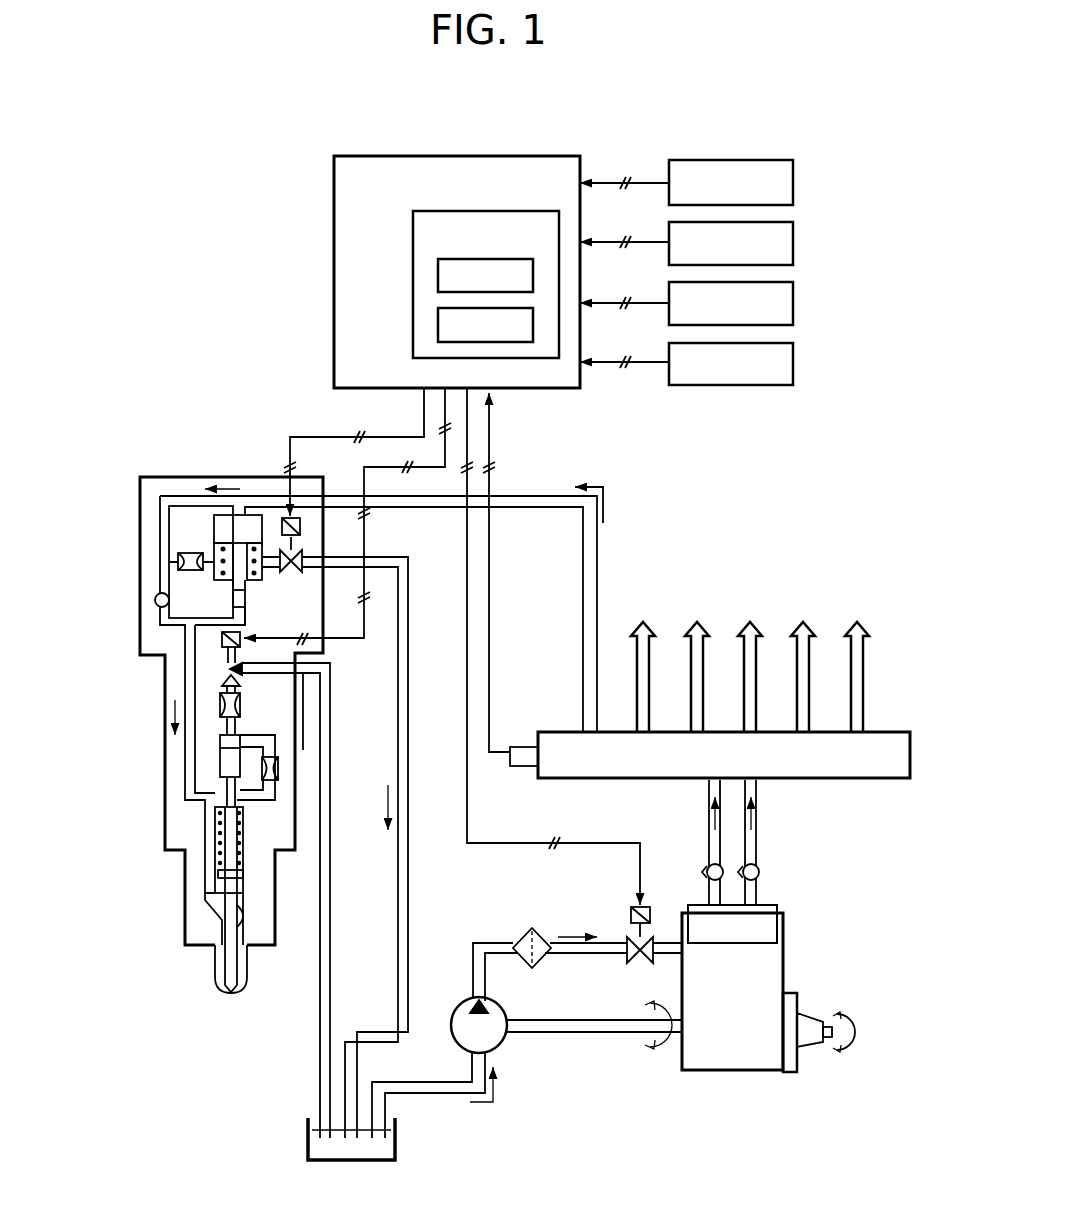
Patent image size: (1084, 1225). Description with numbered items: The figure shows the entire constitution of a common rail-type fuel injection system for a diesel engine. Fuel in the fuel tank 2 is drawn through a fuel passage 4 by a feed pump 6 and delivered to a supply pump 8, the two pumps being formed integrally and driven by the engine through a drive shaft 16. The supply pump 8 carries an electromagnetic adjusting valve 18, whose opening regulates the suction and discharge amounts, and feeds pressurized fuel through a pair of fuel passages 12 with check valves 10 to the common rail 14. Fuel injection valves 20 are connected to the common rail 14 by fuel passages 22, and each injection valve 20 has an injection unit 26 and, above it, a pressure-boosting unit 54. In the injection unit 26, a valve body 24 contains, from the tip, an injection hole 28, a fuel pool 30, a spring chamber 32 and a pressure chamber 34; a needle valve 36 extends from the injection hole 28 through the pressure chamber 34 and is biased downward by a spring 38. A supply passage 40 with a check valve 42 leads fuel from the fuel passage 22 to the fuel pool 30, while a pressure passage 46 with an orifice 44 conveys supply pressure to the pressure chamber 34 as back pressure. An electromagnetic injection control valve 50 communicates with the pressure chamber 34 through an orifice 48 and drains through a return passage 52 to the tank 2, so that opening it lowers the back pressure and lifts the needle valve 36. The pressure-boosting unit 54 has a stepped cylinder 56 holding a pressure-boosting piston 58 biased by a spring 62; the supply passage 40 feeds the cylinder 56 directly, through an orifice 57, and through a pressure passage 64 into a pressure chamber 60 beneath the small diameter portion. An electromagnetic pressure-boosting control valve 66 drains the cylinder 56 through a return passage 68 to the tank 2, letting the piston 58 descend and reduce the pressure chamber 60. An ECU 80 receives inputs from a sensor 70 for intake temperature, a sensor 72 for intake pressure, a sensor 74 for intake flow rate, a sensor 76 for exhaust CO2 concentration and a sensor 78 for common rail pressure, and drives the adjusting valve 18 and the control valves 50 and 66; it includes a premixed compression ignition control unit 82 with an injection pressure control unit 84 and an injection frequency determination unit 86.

The fuel tank 2 is at (308, 1147).
The fuel passage 4 is at (440, 1094).
The feed pump 6 is at (460, 1004).
The supply pump 8 is at (785, 966).
The check valve 10 is at (760, 873).
The fuel passage 12 is at (757, 848).
The common rail 14 is at (872, 780).
The drive shaft 16 is at (563, 1034).
The electromagnetic adjusting valve 18 is at (631, 914).
The fuel injection valve 20 is at (160, 355).
The fuel passage 22 is at (582, 612).
The valve body 24 is at (300, 724).
The injection unit 26 is at (140, 843).
The injection hole 28 is at (215, 978).
The fuel pool 30 is at (215, 940).
The spring chamber 32 is at (215, 830).
The pressure chamber 34 is at (220, 755).
The needle valve 36 is at (247, 912).
The spring 38 is at (218, 857).
The supply passage 40 is at (175, 498).
The check valve 42 is at (155, 601).
The orifice 44 is at (278, 768).
The pressure passage 46 is at (262, 812).
The orifice 48 is at (265, 690).
The electromagnetic injection control valve 50 is at (222, 678).
The return passage 52 is at (318, 1040).
The pressure-boosting unit 54 is at (220, 413).
The cylinder 56 is at (213, 524).
The orifice 57 is at (178, 565).
The pressure-boosting piston 58 is at (212, 528).
The pressure chamber 60 is at (248, 598).
The spring 62 is at (216, 548).
The pressure passage 64 is at (222, 640).
The electromagnetic pressure-boosting control valve 66 is at (302, 527).
The return passage 68 is at (410, 684).
The sensor 70 is at (793, 183).
The sensor 72 is at (793, 242).
The sensor 74 is at (793, 303).
The sensor 76 is at (793, 362).
The sensor 78 is at (518, 747).
The ECU 80 is at (334, 183).
The premixed compression ignition control unit 82 is at (413, 228).
The injection pressure control unit 84 is at (438, 276).
The injection frequency determination unit 86 is at (438, 325).